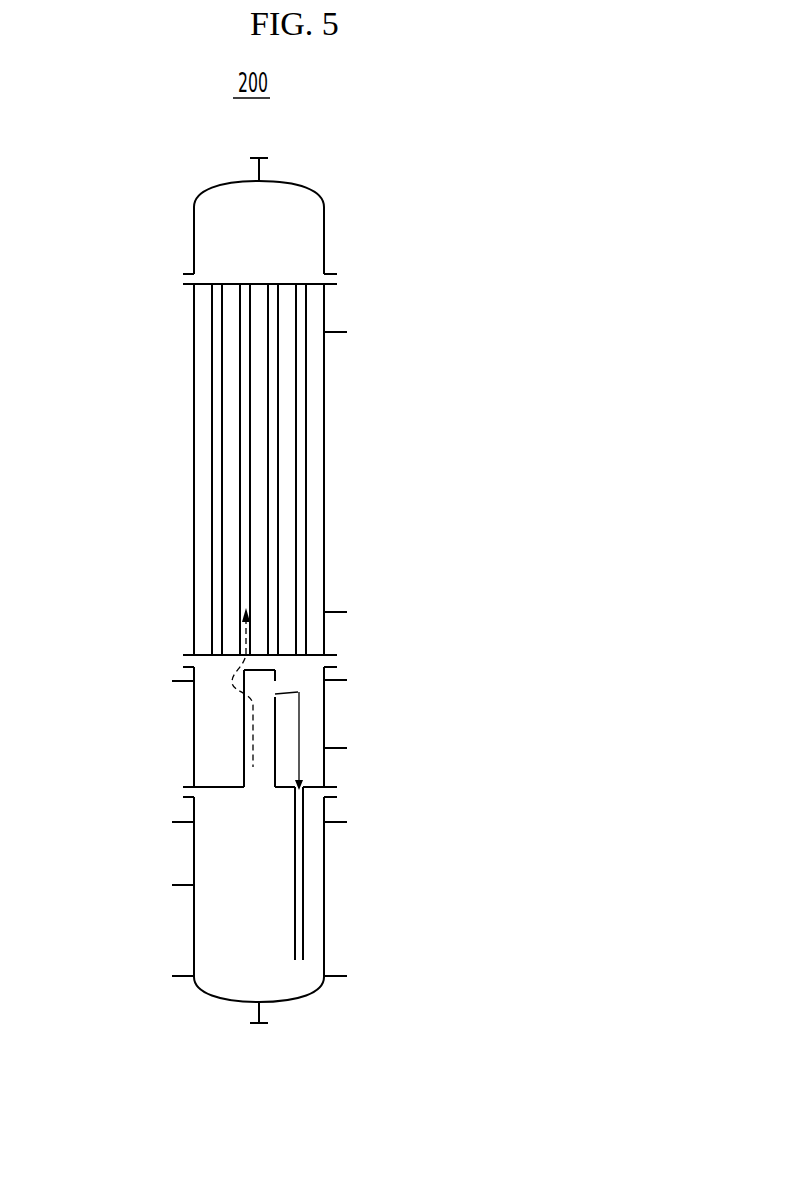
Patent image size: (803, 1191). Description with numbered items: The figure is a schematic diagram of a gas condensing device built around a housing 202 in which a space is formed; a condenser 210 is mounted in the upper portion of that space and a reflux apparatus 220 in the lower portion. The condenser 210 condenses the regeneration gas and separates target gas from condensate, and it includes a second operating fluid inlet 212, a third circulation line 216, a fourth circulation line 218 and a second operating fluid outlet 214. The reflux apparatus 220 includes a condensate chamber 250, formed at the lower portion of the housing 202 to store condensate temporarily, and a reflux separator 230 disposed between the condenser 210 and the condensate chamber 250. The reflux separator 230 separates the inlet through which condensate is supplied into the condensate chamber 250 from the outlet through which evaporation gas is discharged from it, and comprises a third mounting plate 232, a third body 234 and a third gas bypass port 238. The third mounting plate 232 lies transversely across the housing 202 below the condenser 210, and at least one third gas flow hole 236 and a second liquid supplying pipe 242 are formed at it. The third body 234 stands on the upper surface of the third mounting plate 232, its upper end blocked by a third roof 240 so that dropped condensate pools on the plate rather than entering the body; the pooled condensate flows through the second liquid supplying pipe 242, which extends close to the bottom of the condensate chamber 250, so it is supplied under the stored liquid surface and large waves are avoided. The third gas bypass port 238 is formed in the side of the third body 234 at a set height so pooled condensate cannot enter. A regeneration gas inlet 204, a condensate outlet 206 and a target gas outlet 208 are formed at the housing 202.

The housing 202 is at (325, 241).
The regeneration gas inlet 204 is at (261, 168).
The condensate outlet 206 is at (267, 1010).
The target gas outlet 208 is at (335, 750).
The condenser 210 is at (323, 460).
The second operating fluid inlet 212 is at (334, 612).
The second operating fluid outlet 214 is at (335, 332).
The third circulation line 216 is at (305, 289).
The fourth circulation line 218 is at (285, 393).
The reflux apparatus 220 is at (71, 675).
The reflux separator 230 is at (265, 698).
The third mounting plate 232 is at (213, 787).
The third body 234 is at (244, 745).
The third gas flow hole 236 is at (263, 789).
The third gas bypass port 238 is at (272, 608).
The third roof 240 is at (258, 670).
The second liquid supplying pipe 242 is at (303, 933).
The condensate chamber 250 is at (260, 912).